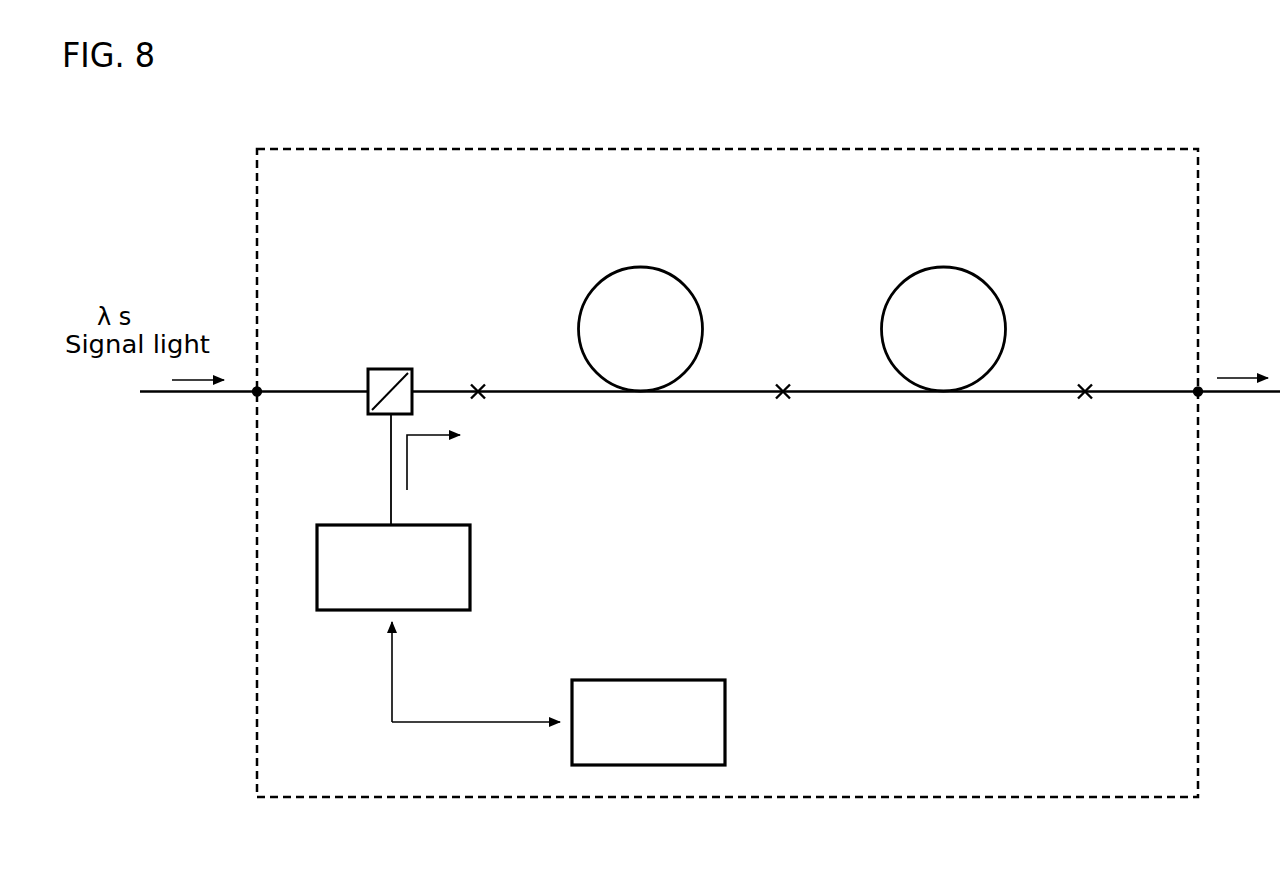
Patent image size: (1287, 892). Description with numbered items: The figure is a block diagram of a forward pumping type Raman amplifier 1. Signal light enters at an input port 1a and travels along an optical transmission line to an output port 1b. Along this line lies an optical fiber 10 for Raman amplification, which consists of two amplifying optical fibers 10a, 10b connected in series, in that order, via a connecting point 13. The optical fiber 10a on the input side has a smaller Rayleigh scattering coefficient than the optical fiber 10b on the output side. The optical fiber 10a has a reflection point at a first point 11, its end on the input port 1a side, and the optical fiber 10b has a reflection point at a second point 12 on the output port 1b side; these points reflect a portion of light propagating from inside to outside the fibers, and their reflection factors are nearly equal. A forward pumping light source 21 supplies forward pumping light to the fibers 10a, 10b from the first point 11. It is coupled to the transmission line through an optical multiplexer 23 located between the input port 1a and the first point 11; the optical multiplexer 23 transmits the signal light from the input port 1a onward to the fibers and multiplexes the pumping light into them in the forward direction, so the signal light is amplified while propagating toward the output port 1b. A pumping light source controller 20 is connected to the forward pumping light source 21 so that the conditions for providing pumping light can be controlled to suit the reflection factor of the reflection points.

The Raman amplifier 1 is at (940, 148).
The input port 1a is at (257, 392).
The output port 1b is at (1198, 392).
The optical fiber 10 is at (843, 295).
The amplifying optical fiber 10a is at (665, 268).
The amplifying optical fiber 10b is at (968, 268).
The first point 11 is at (478, 384).
The second point 12 is at (1085, 384).
The connecting point 13 is at (783, 384).
The pumping light source controller 20 is at (672, 680).
The forward pumping light source 21 is at (470, 568).
The optical multiplexer 23 is at (385, 368).